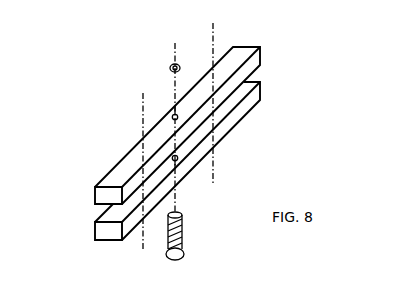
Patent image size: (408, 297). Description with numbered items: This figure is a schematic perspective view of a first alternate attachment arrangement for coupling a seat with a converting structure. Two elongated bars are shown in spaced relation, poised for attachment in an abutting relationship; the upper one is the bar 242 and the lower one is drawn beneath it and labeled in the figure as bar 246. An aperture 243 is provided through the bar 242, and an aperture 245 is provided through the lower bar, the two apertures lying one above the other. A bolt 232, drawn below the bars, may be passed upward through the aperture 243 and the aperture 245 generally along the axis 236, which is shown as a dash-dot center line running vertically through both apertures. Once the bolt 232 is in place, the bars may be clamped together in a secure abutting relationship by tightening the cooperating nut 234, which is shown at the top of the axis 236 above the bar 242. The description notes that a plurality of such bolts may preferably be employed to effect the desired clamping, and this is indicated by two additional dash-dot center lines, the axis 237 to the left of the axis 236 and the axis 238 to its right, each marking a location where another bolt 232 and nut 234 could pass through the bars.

The bolt 232 is at (184, 258).
The nut 234 is at (170, 67).
The axis 236 is at (174, 53).
The additional axis 237 is at (143, 258).
The additional axis 238 is at (213, 170).
The bar 242 is at (95, 200).
The aperture 243 is at (175, 106).
The aperture 245 is at (177, 162).
The lower bar 246 is at (95, 227).